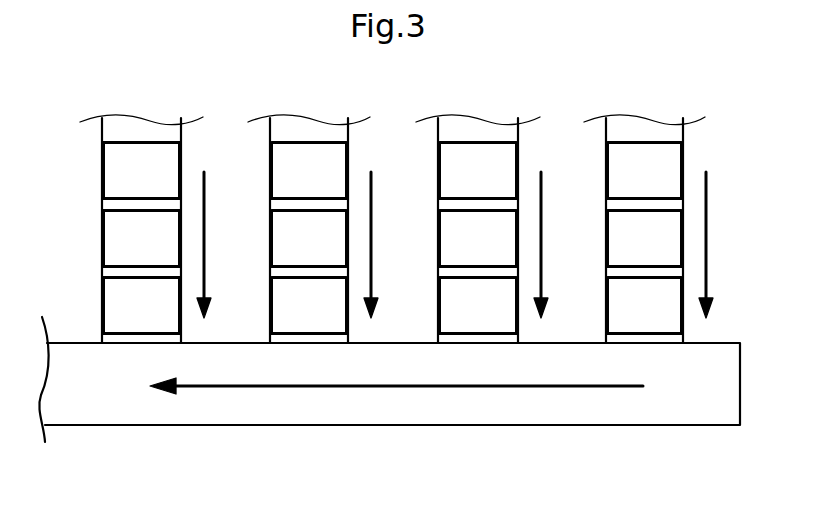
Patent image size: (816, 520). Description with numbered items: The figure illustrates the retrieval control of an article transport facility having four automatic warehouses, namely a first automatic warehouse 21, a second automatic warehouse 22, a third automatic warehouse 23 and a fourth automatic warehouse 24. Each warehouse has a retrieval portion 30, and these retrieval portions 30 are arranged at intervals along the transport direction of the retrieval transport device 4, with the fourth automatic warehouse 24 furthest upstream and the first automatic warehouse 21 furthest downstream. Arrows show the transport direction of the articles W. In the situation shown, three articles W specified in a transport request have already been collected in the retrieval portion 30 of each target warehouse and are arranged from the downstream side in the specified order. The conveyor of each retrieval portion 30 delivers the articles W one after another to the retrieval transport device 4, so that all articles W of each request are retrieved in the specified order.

The retrieval portion 30 is at (435, 201).
The first automatic warehouse 21 is at (182, 134).
The second automatic warehouse 22 is at (349, 134).
The third automatic warehouse 23 is at (519, 134).
The fourth automatic warehouse 24 is at (684, 134).
The article W is at (112, 173).
The retrieval transport device 4 is at (443, 426).